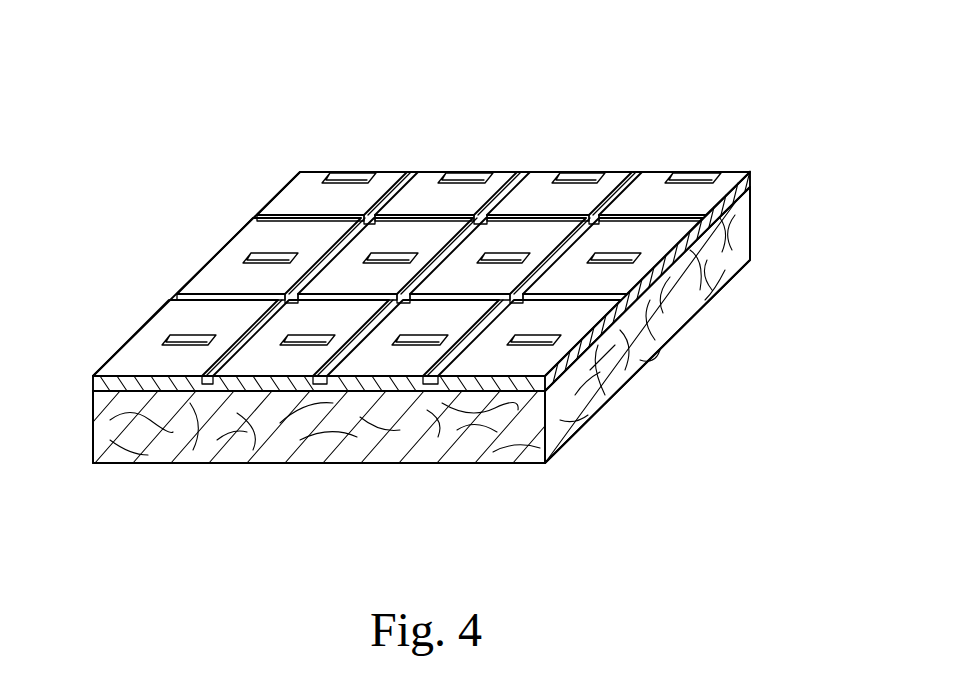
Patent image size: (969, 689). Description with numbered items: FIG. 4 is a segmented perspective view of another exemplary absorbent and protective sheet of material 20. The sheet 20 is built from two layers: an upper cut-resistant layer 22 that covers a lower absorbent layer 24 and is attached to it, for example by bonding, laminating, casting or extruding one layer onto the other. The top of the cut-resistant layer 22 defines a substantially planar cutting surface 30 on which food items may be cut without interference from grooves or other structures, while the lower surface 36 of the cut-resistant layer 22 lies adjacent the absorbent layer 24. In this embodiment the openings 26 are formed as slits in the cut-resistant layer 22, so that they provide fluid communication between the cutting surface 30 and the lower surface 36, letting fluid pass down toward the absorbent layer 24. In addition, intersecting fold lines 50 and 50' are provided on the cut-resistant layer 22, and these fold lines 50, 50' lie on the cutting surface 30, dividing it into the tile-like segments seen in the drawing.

The absorbent and protective sheet of material 20 is at (766, 82).
The cut-resistant layer 22 is at (92, 384).
The absorbent layer 24 is at (527, 432).
The openings 26 is at (463, 174).
The cutting surface 30 is at (132, 368).
The lower surface 36 is at (462, 393).
The fold lines 50 is at (421, 238).
The fold lines 50' is at (467, 257).